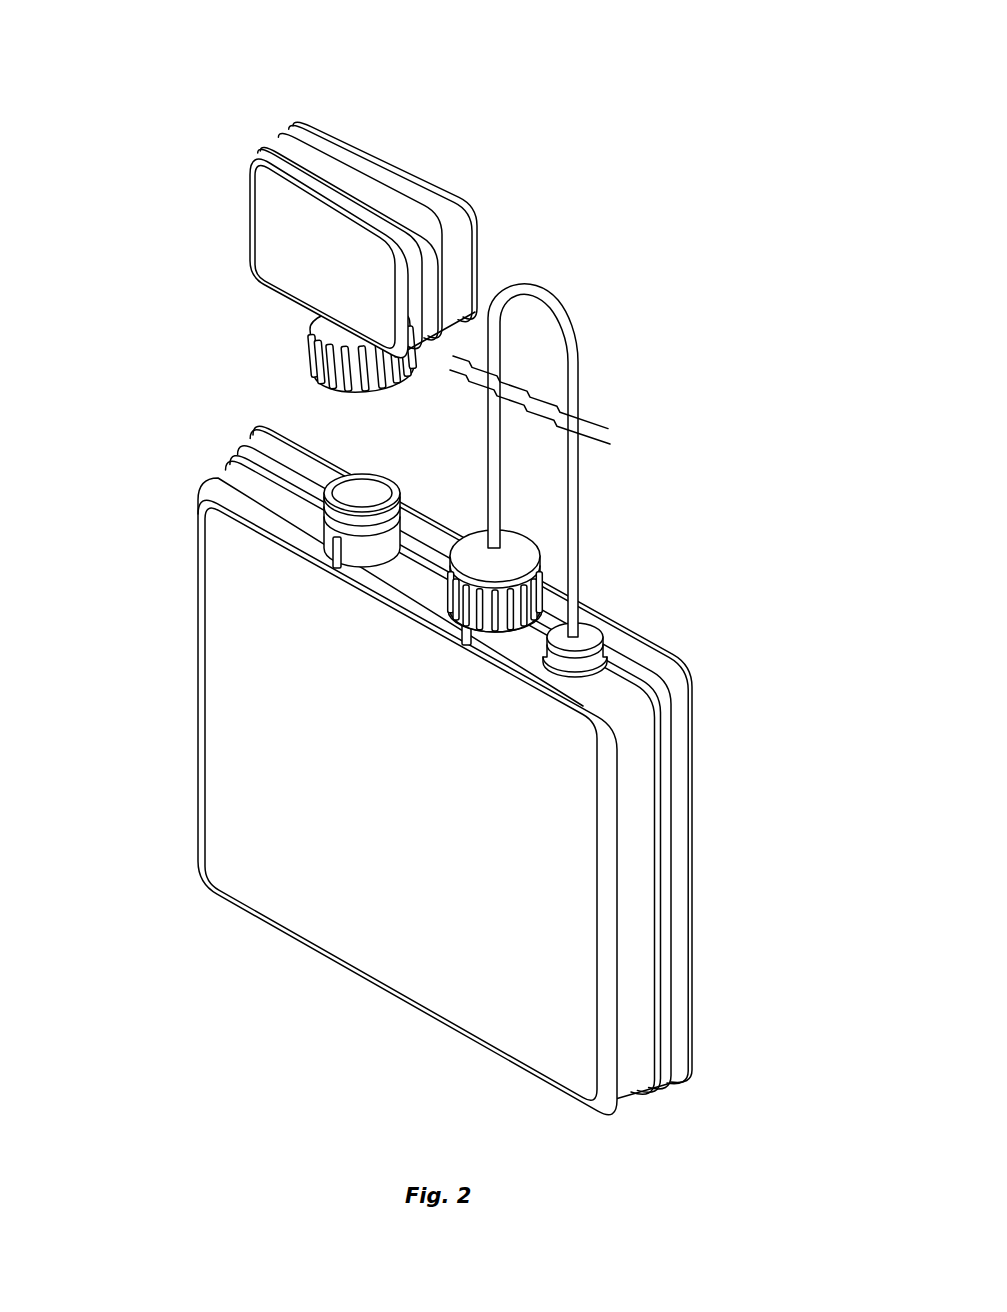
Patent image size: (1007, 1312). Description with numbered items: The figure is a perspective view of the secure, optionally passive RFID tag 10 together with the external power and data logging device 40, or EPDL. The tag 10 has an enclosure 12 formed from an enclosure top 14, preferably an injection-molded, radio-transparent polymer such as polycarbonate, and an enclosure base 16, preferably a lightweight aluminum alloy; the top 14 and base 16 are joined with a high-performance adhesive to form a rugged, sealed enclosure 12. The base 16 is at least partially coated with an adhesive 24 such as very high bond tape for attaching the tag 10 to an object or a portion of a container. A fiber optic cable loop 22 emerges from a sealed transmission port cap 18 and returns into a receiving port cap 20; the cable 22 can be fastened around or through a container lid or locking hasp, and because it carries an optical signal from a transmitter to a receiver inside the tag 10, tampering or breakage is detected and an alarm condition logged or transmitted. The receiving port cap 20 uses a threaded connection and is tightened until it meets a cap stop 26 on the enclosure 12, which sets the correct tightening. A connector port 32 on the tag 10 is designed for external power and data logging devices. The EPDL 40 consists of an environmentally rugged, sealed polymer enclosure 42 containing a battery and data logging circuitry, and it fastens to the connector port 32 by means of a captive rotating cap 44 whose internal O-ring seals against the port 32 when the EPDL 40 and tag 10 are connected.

The tag 10 is at (456, 560).
The enclosure 12 is at (456, 770).
The enclosure top 14 is at (293, 745).
The enclosure base 16 is at (748, 993).
The transmission port cap 18 is at (587, 635).
The receiving port cap 20 is at (468, 552).
The fiber optic cable loop 22 is at (572, 560).
The adhesive 24 is at (690, 760).
The cap stop 26 is at (463, 637).
The connector port 32 is at (332, 450).
The external power and data logging device 40 is at (310, 201).
The enclosure 42 is at (323, 137).
The captive rotating cap 44 is at (312, 352).